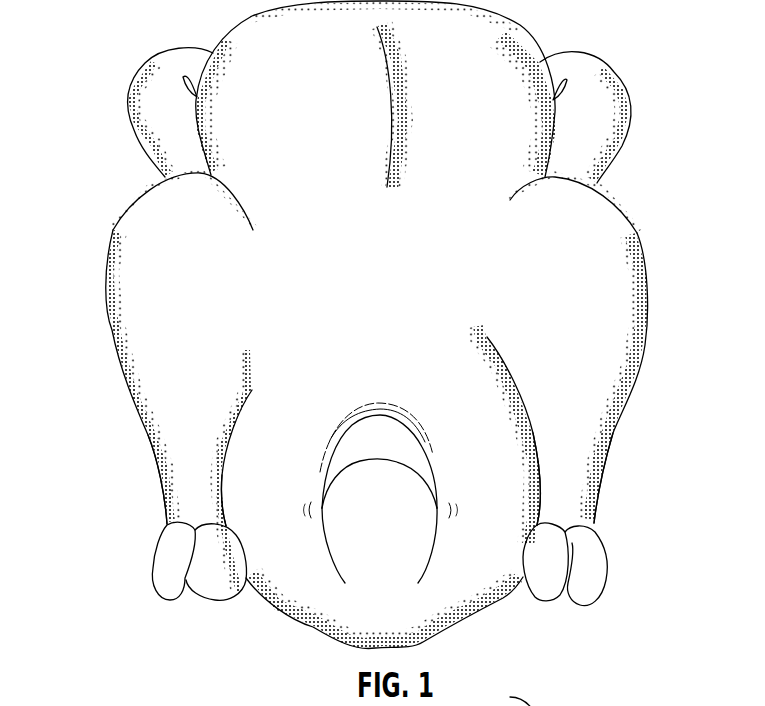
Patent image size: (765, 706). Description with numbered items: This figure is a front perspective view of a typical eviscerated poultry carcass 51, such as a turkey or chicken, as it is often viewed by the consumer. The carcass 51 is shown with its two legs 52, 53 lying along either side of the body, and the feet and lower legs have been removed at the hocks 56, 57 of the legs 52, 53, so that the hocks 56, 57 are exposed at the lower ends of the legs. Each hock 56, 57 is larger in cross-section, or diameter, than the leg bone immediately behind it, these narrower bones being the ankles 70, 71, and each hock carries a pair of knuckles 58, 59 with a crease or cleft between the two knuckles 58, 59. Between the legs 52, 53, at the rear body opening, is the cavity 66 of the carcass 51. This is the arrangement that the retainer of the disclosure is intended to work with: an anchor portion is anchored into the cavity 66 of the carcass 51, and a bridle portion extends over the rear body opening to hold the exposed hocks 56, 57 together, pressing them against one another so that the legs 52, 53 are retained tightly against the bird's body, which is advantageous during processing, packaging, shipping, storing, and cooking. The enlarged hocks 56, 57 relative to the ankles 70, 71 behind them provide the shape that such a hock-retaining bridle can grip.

The carcass 51 is at (103, 30).
The leg 52 is at (603, 227).
The leg 53 is at (148, 250).
The hock 56 is at (580, 462).
The hock 57 is at (177, 483).
The knuckle 58 is at (543, 577).
The knuckle 59 is at (190, 574).
The cavity 66 is at (367, 411).
The ankle 70 is at (587, 520).
The ankle 71 is at (167, 523).